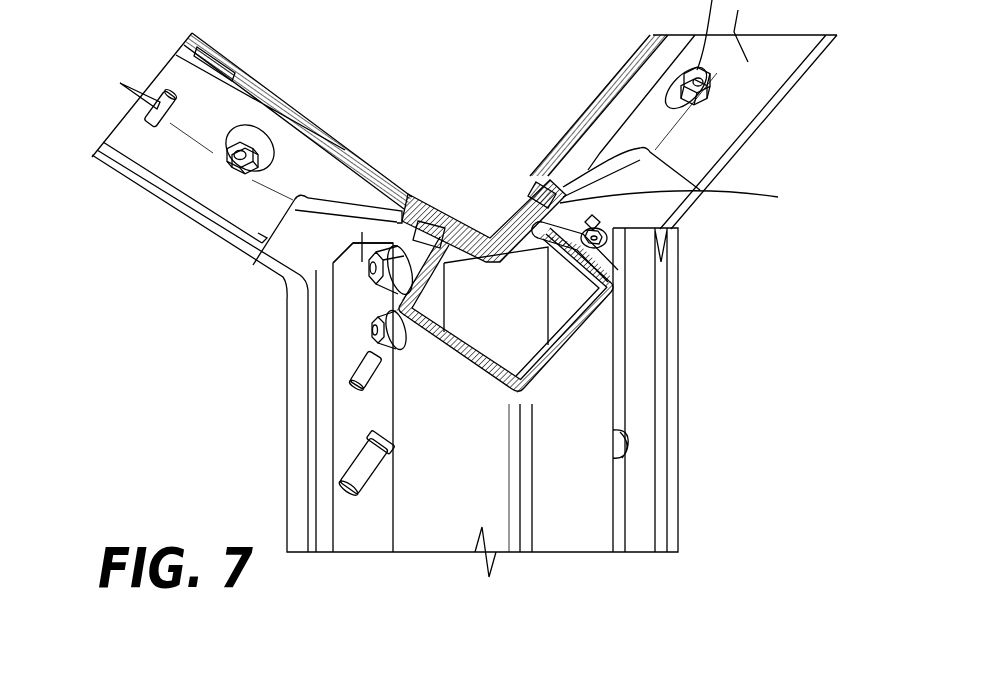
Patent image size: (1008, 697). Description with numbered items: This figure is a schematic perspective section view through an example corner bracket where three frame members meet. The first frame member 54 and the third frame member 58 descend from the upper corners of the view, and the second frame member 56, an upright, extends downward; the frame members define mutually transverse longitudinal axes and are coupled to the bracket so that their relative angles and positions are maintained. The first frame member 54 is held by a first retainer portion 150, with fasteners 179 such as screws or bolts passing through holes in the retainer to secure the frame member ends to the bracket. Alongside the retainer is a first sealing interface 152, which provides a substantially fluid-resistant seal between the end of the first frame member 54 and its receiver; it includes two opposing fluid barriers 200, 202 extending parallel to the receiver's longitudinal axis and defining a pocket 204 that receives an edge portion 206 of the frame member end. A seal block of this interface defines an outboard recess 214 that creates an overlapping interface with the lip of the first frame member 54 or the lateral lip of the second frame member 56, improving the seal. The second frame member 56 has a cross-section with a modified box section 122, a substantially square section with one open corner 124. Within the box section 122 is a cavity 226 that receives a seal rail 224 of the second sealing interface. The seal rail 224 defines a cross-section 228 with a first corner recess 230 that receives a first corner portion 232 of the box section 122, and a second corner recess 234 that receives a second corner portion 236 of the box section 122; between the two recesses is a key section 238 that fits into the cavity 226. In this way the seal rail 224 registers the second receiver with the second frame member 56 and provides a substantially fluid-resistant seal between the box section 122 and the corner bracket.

The first frame member 54 is at (730, 128).
The second frame member 56 is at (585, 548).
The third frame member 58 is at (130, 167).
The box section 122 is at (575, 340).
The open corner 124 is at (483, 205).
The first retainer portion 150 is at (550, 60).
The first sealing interface 152 is at (139, 344).
The fasteners 179 is at (248, 138).
The fluid barrier 200 is at (410, 197).
The fluid barrier 202 is at (378, 205).
The pocket 204 is at (437, 207).
The edge portion 206 is at (405, 190).
The outboard recess 214 is at (258, 245).
The seal rail 224 is at (470, 250).
The cavity 226 is at (487, 357).
The cross-section 228 is at (532, 256).
The first corner recess 230 is at (508, 232).
The first corner portion 232 is at (585, 225).
The second corner recess 234 is at (484, 236).
The second corner portion 236 is at (397, 252).
The key section 238 is at (505, 240).